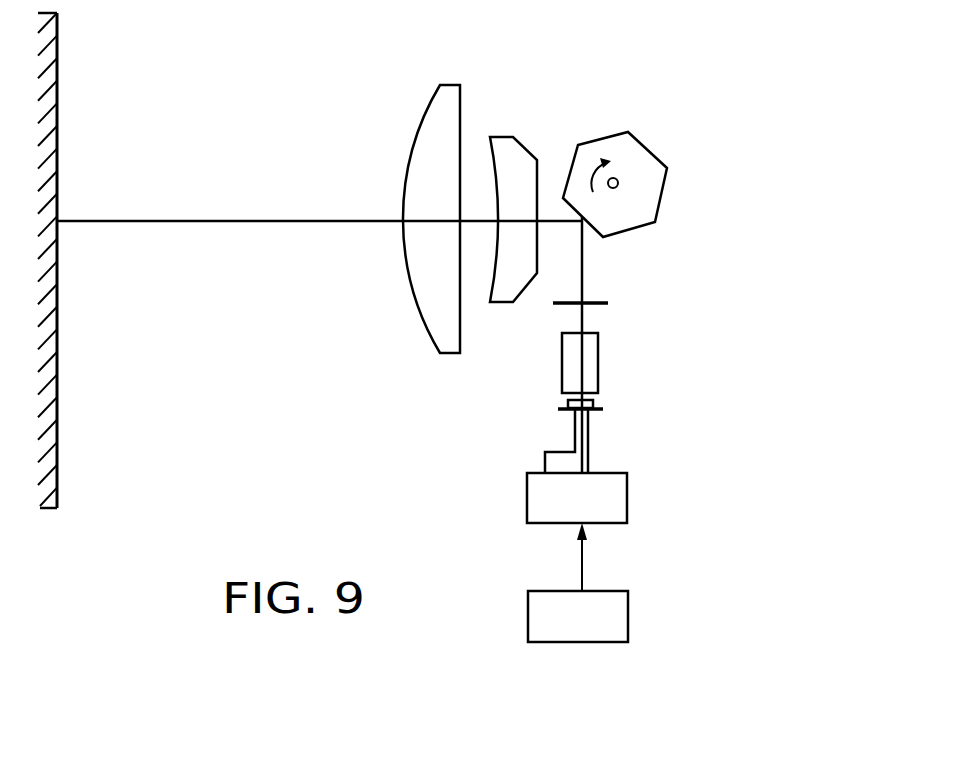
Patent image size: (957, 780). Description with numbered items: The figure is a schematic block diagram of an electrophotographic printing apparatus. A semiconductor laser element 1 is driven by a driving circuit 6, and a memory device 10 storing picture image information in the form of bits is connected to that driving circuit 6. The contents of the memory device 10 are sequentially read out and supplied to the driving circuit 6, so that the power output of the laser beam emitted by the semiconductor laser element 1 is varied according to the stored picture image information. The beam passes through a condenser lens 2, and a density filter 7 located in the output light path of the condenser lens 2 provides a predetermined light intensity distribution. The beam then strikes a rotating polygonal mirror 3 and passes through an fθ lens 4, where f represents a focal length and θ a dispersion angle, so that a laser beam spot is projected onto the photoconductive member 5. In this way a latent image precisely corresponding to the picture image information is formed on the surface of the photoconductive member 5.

The semiconductor laser element 1 is at (607, 419).
The condenser lens 2 is at (598, 362).
The rotating polygonal mirror 3 is at (655, 152).
The fθ lens 4 is at (474, 103).
The photoconductive member 5 is at (58, 423).
The driving circuit 6 is at (627, 505).
The density filter 7 is at (600, 301).
The memory device 10 is at (580, 643).